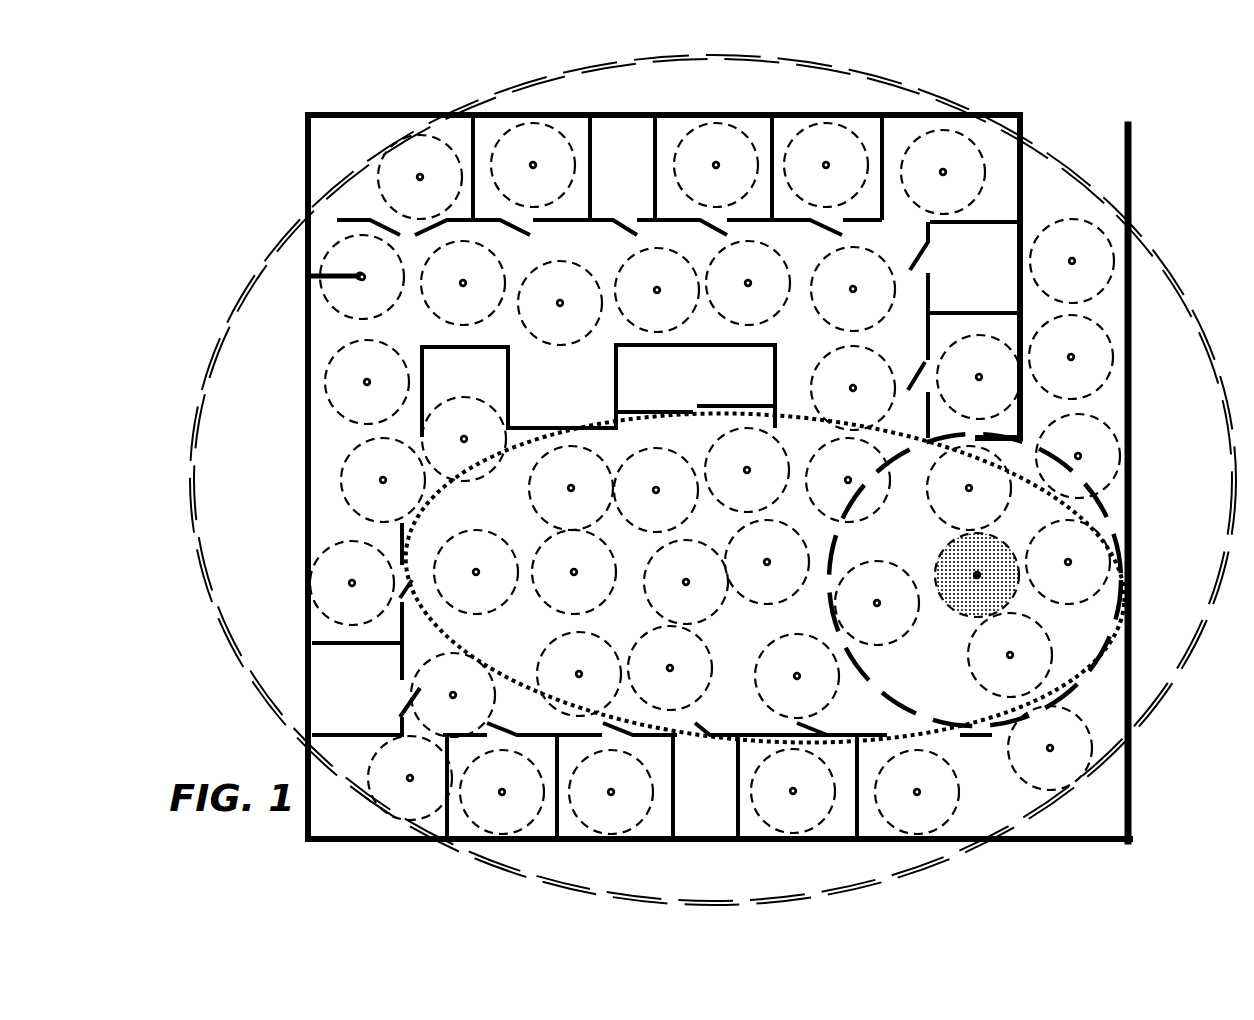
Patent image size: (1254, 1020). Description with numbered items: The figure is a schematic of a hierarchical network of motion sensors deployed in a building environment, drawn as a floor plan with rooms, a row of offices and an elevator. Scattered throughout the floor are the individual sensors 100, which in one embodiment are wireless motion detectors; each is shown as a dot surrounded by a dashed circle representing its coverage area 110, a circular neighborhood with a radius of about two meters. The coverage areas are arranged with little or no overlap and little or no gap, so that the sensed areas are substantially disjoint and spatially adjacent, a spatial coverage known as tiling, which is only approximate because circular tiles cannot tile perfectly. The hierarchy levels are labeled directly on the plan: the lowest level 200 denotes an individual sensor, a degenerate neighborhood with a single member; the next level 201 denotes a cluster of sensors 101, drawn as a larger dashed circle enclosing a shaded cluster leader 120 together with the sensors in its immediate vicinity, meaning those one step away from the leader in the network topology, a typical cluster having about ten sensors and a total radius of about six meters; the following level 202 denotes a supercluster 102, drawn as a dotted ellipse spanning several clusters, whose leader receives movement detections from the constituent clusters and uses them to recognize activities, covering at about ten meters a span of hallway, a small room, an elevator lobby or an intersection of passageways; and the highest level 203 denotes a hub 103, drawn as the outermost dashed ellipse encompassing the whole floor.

The sensors 100 is at (1069, 560).
The clusters of sensors 101 is at (1068, 683).
The superclusters 102 is at (524, 458).
The hubs 103 is at (258, 268).
The coverage area 110 is at (350, 505).
The cluster leader 120 is at (978, 568).
The L0 200 is at (1097, 578).
The L1 201 is at (925, 697).
The L2 202 is at (742, 727).
The L3 203 is at (262, 593).